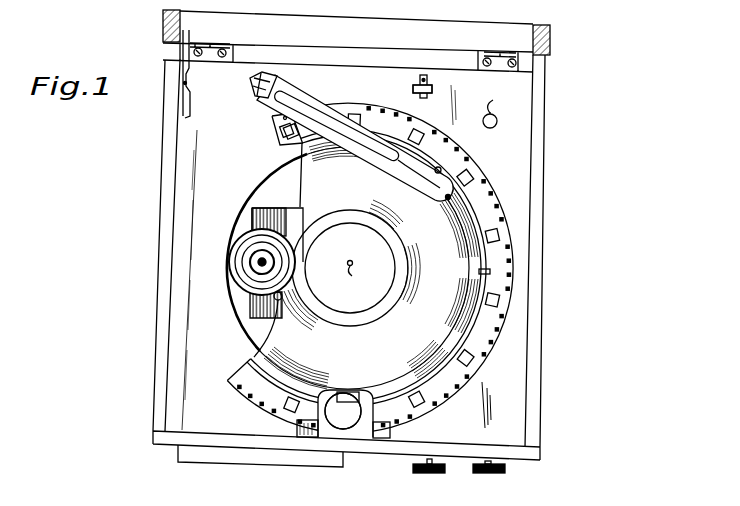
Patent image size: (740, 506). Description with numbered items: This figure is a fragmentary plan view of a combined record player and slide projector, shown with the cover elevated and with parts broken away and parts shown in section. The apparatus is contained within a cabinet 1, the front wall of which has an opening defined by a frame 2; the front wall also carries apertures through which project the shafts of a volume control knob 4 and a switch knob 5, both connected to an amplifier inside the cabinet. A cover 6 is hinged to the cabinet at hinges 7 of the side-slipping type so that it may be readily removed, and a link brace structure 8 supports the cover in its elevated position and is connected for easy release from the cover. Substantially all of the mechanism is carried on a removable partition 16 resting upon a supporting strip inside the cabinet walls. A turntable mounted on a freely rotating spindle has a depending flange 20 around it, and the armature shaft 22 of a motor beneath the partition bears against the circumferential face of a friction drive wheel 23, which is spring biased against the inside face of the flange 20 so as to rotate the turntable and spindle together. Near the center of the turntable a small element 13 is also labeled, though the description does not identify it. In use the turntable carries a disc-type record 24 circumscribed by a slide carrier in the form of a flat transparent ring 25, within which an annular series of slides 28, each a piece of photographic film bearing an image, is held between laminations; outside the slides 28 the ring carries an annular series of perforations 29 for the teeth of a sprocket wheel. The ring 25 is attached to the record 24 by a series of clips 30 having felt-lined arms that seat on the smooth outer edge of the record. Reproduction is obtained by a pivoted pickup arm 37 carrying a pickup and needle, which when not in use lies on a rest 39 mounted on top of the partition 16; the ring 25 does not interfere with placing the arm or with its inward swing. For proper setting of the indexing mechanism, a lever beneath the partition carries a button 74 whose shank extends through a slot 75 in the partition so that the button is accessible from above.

The cabinet 1 is at (536, 228).
The frame 2 is at (222, 458).
The volume control knob 4 is at (420, 470).
The switch knob 5 is at (488, 473).
The cover 6 is at (549, 37).
The hinges 7 is at (372, 52).
The link brace structure 8 is at (187, 84).
The center pin 13 is at (358, 279).
The removable partition 16 is at (223, 336).
The depending flange 20 is at (256, 197).
The armature shaft 22 is at (283, 302).
The friction drive wheel 23 is at (250, 243).
The disc-type record 24 is at (433, 328).
The slide carrier ring 25 is at (409, 268).
The slide 28 is at (500, 293).
The perforations 29 is at (488, 183).
The clips 30 is at (428, 373).
The pickup arm 37 is at (277, 98).
The rest 39 is at (420, 87).
The button 74 is at (488, 128).
The slot 75 is at (506, 96).